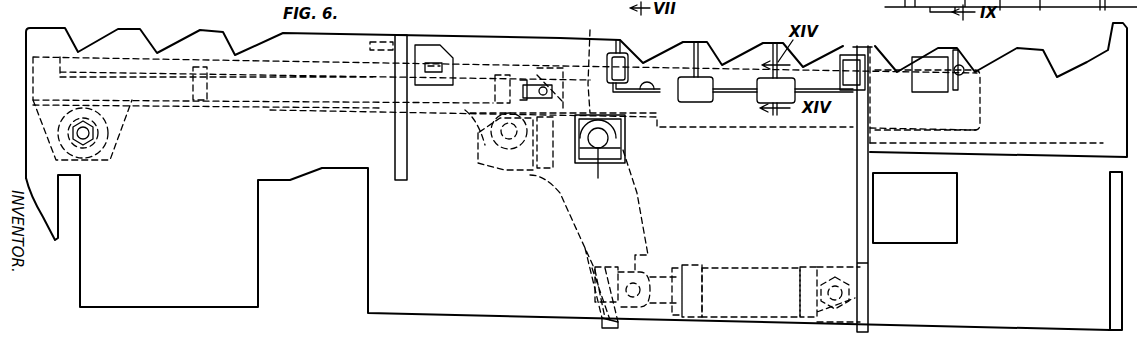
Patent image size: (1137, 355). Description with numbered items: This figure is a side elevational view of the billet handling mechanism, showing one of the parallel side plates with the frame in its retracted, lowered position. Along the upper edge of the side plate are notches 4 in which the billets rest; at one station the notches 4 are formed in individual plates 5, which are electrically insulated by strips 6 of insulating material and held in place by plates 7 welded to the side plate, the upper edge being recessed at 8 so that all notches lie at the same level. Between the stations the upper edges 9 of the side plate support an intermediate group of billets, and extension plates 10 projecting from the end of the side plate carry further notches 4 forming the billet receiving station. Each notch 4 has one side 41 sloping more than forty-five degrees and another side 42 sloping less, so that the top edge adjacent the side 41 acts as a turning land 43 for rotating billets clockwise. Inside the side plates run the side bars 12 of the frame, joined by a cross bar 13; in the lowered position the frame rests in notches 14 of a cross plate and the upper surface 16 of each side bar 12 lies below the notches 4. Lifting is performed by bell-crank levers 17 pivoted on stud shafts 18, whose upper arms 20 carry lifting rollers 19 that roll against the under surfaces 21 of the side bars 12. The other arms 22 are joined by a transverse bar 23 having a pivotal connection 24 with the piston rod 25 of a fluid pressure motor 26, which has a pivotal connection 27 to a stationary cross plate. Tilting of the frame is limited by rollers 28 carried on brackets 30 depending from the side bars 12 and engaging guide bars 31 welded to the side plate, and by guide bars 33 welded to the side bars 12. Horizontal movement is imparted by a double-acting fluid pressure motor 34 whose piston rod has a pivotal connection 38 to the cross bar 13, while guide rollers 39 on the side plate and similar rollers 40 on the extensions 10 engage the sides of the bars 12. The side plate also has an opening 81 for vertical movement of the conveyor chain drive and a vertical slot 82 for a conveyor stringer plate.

The notches 4 is at (160, 45).
The individual plates 5 is at (760, 57).
The strips of electrical insulating material 6 is at (697, 43).
The plates 7 is at (860, 103).
The recess 8 is at (650, 93).
The upper edges 9 is at (463, 38).
The plates (extensions) 10 is at (1052, 135).
The side bars 12 is at (170, 103).
The cross bar 13 is at (565, 63).
The notches 14 is at (395, 100).
The upper surface 16 is at (182, 60).
The levers (bellcranks) 17 is at (638, 193).
The stud shafts 18 is at (600, 157).
The lifting rollers 19 is at (480, 162).
The upper arms 20 is at (505, 168).
The under surfaces 21 is at (490, 110).
The other arms 22 is at (635, 272).
The transversely extending bar 23 is at (590, 275).
The pivotal connection 24 is at (620, 295).
The piston rod 25 is at (682, 265).
The fluid pressure motor 26 is at (742, 268).
The pivotal connection 27 is at (837, 277).
The rollers 28 is at (110, 165).
The brackets 30 is at (125, 125).
The guide bars 31 is at (167, 80).
The guide bars 33 is at (790, 126).
The double-acting fluid pressure motor 34 is at (292, 104).
The pivotal connection 38 is at (543, 84).
The guide rollers 39 is at (430, 62).
The rollers 40 is at (928, 72).
The notch side 41 is at (78, 48).
The notch side 42 is at (104, 28).
The turning lands 43 is at (45, 28).
The opening 81 is at (360, 232).
The vertical slot 82 is at (72, 218).